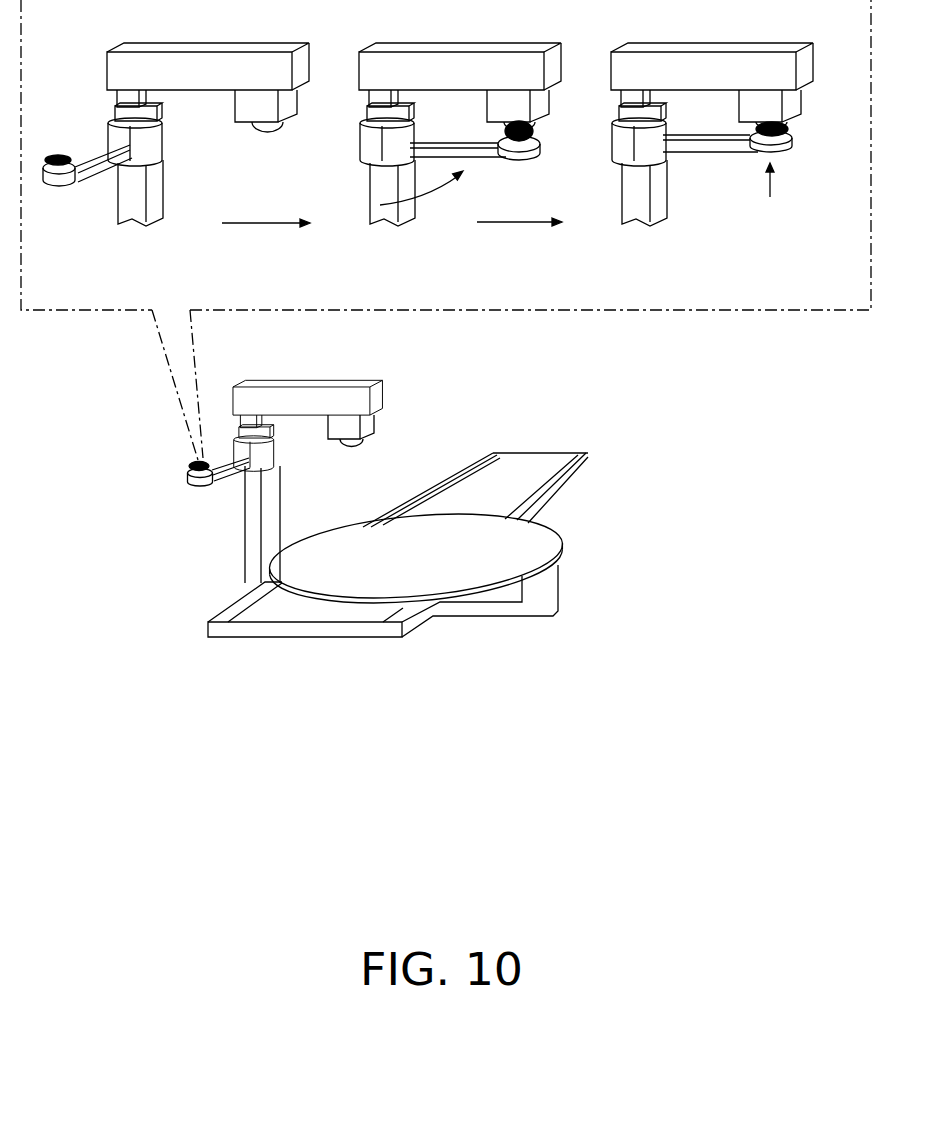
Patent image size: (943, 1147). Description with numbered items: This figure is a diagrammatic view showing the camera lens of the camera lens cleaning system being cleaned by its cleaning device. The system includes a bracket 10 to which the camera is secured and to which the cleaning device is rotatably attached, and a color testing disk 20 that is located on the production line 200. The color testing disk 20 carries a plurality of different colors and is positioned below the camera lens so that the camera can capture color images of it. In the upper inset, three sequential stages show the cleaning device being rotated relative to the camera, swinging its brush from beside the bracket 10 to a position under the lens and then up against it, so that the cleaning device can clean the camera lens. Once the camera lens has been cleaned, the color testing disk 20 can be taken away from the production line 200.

The bracket 10 is at (248, 528).
The color testing disk 20 is at (547, 542).
The production line 200 is at (541, 462).